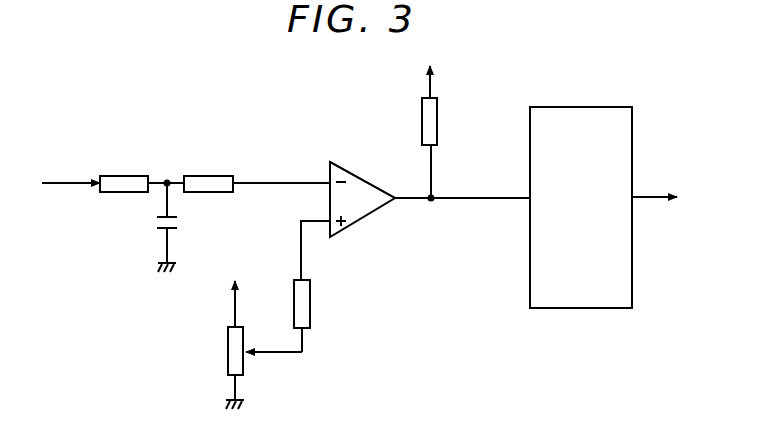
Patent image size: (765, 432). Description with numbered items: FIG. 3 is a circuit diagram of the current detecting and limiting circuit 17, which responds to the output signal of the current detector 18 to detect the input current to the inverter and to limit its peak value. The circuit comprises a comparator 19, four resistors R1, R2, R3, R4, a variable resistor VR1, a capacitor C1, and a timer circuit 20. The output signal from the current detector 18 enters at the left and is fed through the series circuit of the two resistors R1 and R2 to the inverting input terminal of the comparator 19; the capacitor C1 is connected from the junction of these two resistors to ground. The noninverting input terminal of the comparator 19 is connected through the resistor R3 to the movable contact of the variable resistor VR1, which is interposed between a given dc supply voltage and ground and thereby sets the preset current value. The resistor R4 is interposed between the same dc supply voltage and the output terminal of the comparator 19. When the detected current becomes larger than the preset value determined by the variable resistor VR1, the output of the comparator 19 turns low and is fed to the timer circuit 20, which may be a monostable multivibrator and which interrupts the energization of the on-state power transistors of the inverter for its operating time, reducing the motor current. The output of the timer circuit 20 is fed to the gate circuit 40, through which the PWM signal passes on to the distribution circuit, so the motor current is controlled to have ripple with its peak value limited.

The current detecting and limiting circuit 17 is at (329, 130).
The current detector 18 is at (63, 209).
The comparator 19 is at (360, 177).
The timer circuit 20 is at (632, 117).
The gate circuit 40 is at (672, 214).
The resistor R1 is at (124, 173).
The resistor R2 is at (208, 173).
The resistor R3 is at (316, 316).
The resistor R4 is at (442, 120).
The capacitor C1 is at (180, 227).
The variable resistor VR1 is at (228, 342).